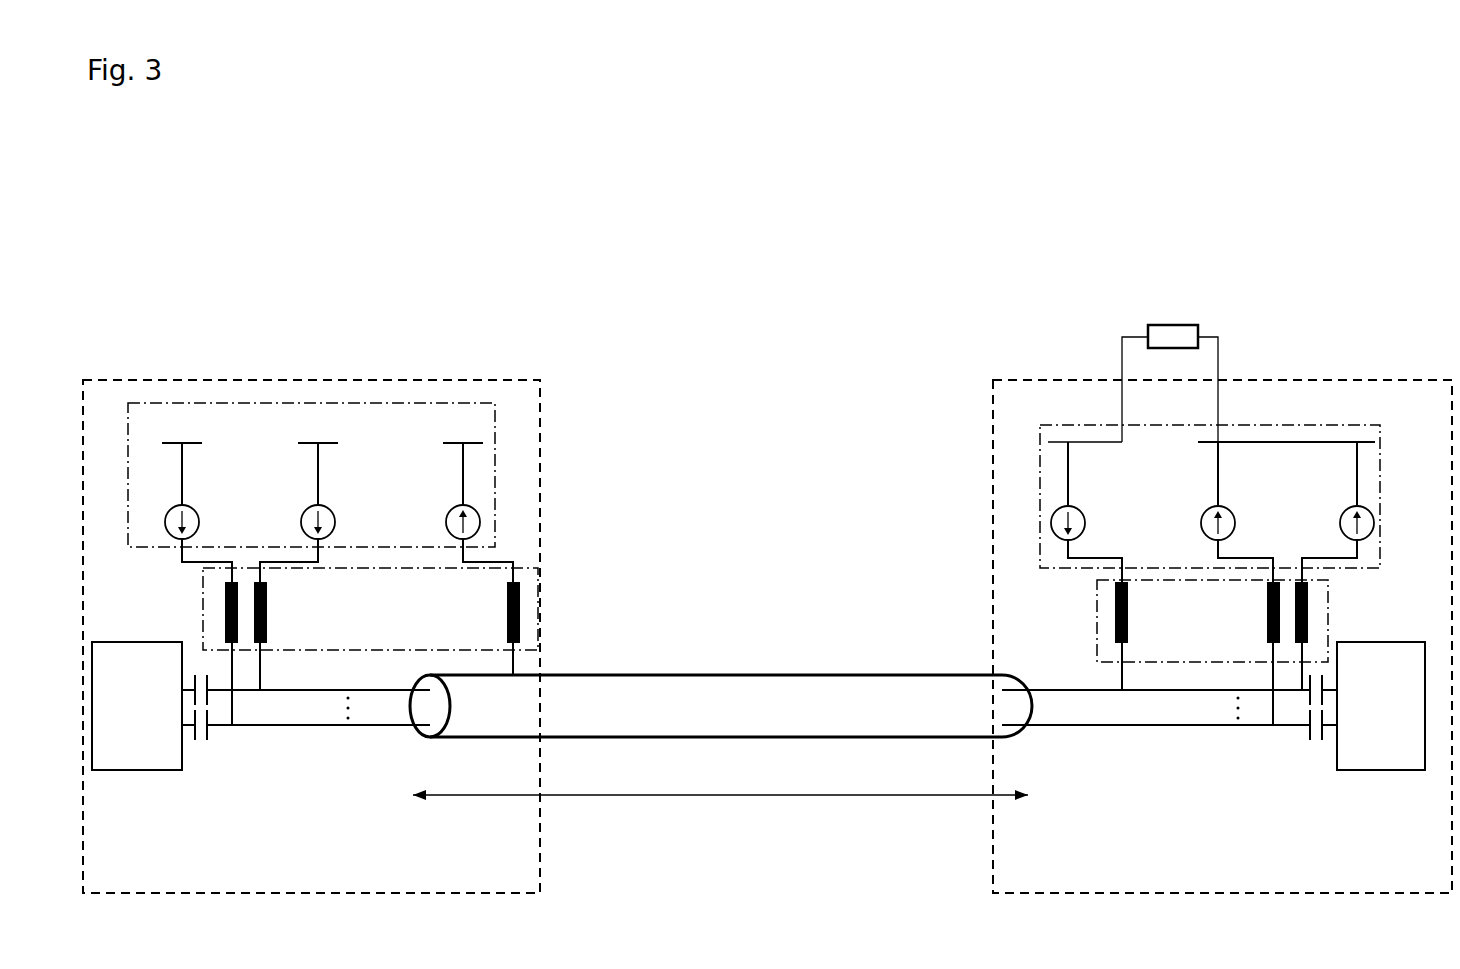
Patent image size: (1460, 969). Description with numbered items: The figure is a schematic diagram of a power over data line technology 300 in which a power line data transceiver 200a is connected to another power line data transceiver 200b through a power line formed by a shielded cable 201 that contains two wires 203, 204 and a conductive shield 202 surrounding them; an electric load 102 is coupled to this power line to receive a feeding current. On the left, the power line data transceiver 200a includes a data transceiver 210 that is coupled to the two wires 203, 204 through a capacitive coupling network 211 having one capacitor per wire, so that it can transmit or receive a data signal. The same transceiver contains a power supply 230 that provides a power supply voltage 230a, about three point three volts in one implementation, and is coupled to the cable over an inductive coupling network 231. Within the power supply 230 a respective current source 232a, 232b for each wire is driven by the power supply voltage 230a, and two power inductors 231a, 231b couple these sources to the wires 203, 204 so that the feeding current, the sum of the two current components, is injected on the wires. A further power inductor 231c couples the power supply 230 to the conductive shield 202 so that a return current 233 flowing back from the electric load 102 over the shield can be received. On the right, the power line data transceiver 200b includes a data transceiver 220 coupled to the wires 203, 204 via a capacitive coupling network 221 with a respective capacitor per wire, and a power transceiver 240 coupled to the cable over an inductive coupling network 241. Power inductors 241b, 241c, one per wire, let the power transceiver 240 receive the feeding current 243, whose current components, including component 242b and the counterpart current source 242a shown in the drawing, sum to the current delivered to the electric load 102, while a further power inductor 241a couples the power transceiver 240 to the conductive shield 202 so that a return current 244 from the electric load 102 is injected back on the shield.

The power over data line technology 300 is at (170, 215).
The power line data transceiver 200a is at (310, 375).
The power line data transceiver 200b is at (1030, 375).
The data transceiver 210 is at (118, 775).
The data transceiver 220 is at (1390, 775).
The capacitive coupling network 211 is at (205, 753).
The capacitive coupling network 221 is at (1318, 752).
The power supply 230 is at (460, 400).
The power supply voltage 230a is at (178, 428).
The inductive coupling network 231 is at (367, 565).
The power inductor 231a is at (222, 618).
The power inductor 231b is at (265, 620).
The further power inductor 231c is at (520, 600).
The current source 232a is at (195, 497).
The current source 232b is at (340, 500).
The return current 233 is at (470, 500).
The shielded cable 201 is at (697, 635).
The conductive shield 202 is at (450, 675).
The wire 203 is at (372, 692).
The wire 204 is at (333, 728).
The electric load 102 is at (1172, 315).
The feeding current 243 is at (1225, 362).
The power transceiver 240 is at (1335, 418).
The inductive coupling network 241 is at (1175, 665).
The further power inductor 241a is at (1113, 618).
The power inductor 241b is at (1265, 628).
The power inductor 241c is at (1310, 620).
The current source 242a is at (1367, 505).
The current component 242b is at (1232, 505).
The return current 244 is at (1088, 510).